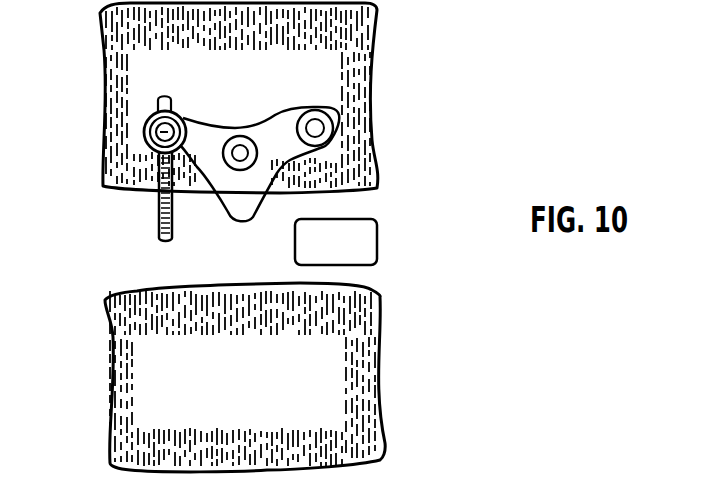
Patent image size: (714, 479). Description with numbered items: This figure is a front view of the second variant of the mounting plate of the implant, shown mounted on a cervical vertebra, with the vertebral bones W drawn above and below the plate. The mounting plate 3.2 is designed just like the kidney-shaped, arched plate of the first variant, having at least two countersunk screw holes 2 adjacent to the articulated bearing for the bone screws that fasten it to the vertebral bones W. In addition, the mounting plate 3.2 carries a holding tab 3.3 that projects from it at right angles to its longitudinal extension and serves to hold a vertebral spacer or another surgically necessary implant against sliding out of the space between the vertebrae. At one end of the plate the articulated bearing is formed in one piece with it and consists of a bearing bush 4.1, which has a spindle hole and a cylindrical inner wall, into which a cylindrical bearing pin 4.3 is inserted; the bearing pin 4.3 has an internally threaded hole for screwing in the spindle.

The vertebral bones W is at (100, 40).
The screw holes 2 is at (339, 110).
The mounting plate 3.2 is at (264, 128).
The holding tab 3.3 is at (243, 207).
The bearing bush 4.1 is at (183, 117).
The bearing pin 4.3 is at (146, 130).